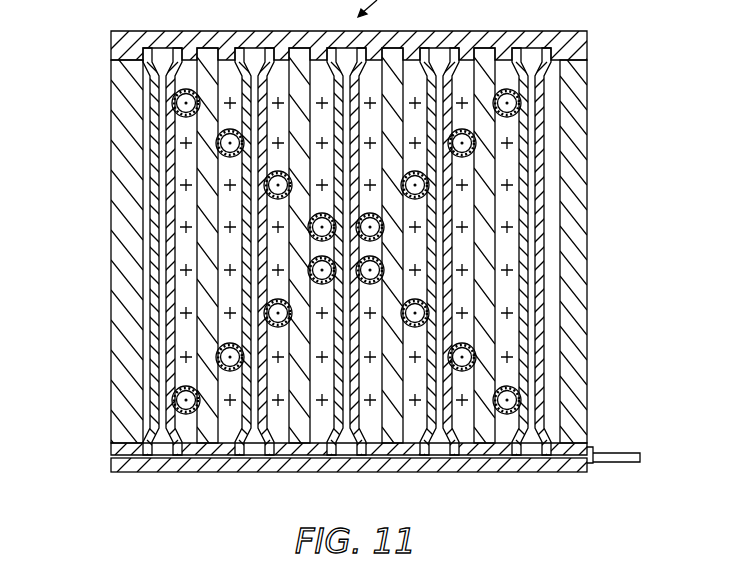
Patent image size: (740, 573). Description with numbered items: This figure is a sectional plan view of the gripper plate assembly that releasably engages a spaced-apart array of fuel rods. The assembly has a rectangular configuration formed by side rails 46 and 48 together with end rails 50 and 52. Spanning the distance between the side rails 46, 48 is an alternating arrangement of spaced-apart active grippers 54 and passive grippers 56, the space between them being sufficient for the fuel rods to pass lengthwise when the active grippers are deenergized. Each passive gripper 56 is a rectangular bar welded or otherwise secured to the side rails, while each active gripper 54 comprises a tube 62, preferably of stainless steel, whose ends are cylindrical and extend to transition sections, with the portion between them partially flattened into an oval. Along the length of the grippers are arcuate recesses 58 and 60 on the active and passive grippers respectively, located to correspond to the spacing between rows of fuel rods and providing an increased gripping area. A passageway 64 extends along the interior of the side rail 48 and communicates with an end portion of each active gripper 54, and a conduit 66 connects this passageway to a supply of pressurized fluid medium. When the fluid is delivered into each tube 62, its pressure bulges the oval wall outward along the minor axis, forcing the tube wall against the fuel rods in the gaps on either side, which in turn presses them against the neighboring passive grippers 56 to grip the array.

The side rail 46 is at (587, 48).
The side rail 48 is at (575, 472).
The end rail 50 is at (587, 222).
The end rail 52 is at (112, 282).
The active gripper 54 is at (150, 186).
The passive gripper 56 is at (198, 200).
The arcuate recess 58 is at (148, 68).
The arcuate recess 60 is at (148, 92).
The tube 62 is at (147, 155).
The passageway 64 is at (111, 457).
The conduit 66 is at (617, 451).